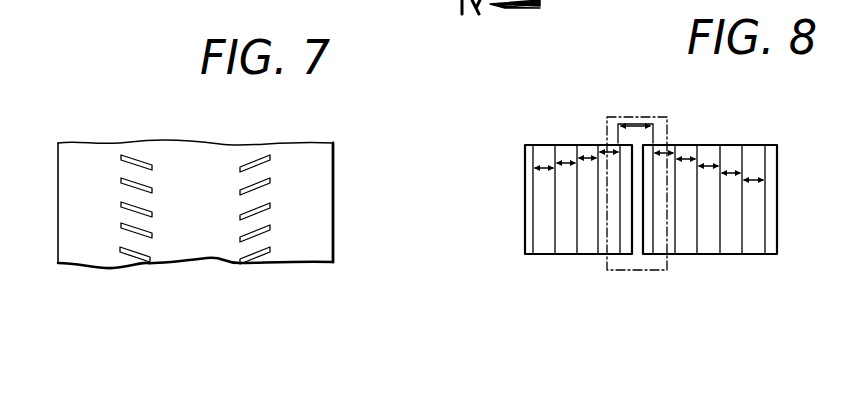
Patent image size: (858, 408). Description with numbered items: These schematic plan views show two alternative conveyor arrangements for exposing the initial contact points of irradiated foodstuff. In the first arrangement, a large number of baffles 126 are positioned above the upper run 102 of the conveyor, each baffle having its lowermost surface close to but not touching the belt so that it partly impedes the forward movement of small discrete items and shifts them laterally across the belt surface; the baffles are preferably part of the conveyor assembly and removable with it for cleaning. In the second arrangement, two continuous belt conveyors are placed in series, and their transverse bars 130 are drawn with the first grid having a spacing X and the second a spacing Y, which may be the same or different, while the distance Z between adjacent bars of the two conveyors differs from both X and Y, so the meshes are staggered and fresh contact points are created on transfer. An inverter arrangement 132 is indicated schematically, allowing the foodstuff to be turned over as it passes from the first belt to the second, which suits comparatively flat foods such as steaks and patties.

In FIG. 7, the upper run of the conveyor 102 is at (268, 146).
In FIG. 7, the baffles 126 is at (240, 257).
In FIG. 8, the transverse bars 130 is at (605, 244).
In FIG. 8, the inverter arrangement 132 is at (663, 272).
In FIG. 8, the grid spacing of the first conveyor X is at (545, 166).
In FIG. 8, the grid spacing of the second conveyor Y is at (752, 178).
In FIG. 8, the distance between adjacent bars on the two conveyors Z is at (637, 117).